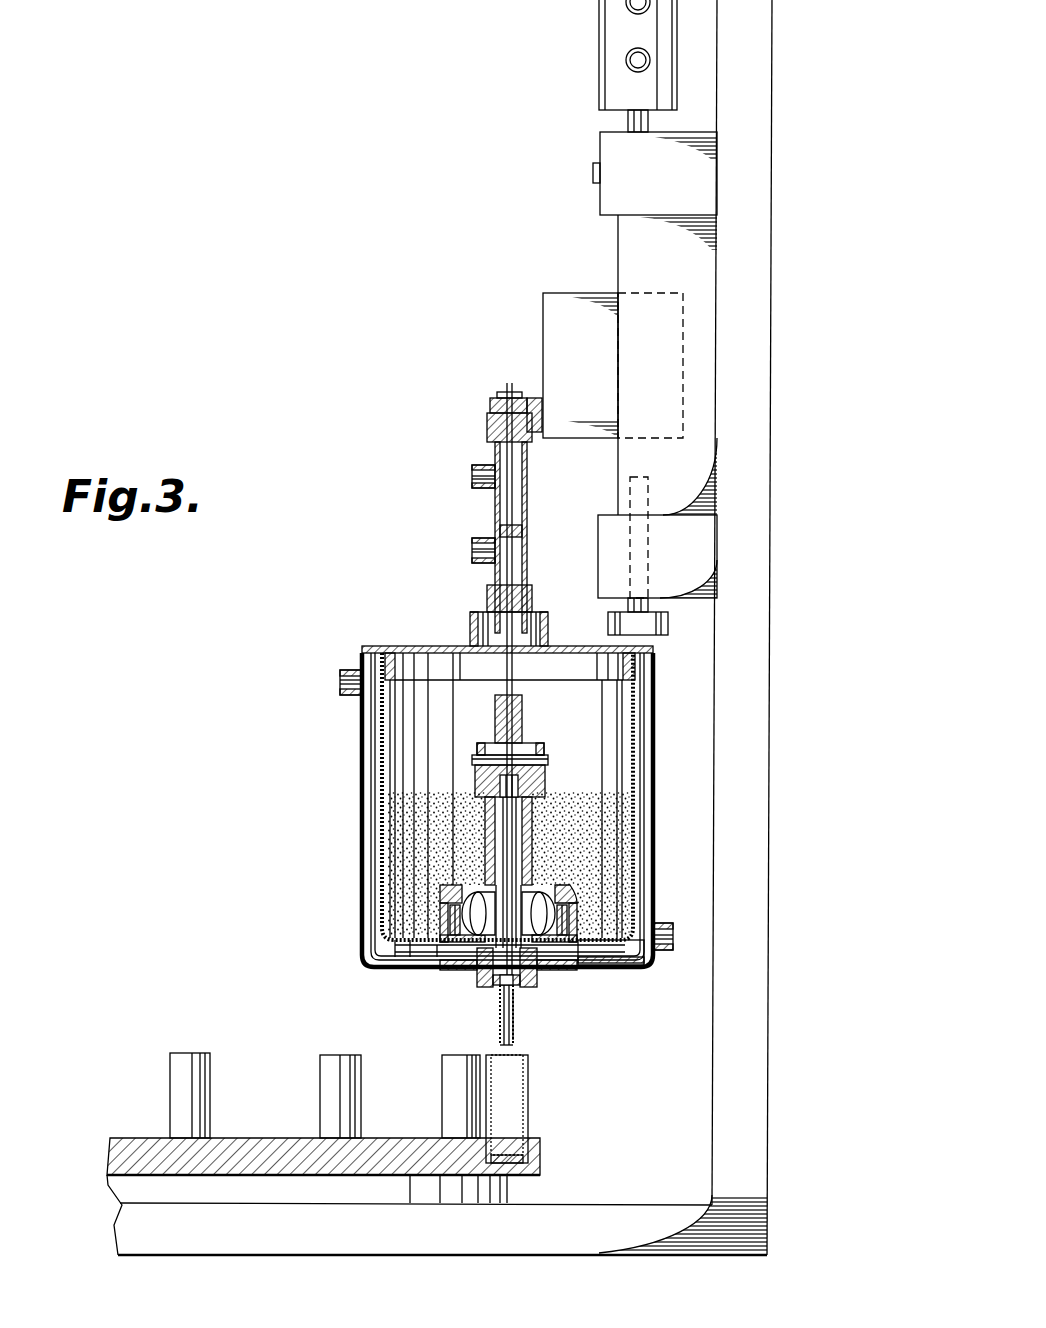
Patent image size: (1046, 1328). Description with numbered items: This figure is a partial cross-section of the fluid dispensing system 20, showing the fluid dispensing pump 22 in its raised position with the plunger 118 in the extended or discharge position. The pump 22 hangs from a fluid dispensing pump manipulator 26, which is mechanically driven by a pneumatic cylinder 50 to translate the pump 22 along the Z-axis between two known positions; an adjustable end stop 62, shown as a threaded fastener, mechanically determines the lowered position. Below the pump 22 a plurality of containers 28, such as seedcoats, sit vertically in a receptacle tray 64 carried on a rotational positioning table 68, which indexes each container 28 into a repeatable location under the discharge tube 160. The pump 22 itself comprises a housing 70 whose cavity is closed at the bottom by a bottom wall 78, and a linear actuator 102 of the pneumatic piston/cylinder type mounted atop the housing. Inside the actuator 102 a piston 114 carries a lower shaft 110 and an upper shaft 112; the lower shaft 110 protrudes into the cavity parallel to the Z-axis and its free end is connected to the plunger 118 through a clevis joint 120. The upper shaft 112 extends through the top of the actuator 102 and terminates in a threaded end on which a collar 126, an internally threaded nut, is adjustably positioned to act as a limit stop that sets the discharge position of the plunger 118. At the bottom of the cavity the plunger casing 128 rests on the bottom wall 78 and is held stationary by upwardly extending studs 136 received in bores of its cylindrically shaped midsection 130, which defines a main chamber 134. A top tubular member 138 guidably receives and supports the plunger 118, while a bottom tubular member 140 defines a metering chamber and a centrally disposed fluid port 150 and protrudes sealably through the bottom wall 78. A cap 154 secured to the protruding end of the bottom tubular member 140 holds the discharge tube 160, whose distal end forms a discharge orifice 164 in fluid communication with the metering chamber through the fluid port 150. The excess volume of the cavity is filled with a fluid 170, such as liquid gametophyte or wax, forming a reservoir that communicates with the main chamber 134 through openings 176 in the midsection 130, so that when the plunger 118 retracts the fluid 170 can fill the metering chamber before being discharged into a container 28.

The fluid dispensing system 20 is at (358, 296).
The fluid dispensing pump 22 is at (337, 637).
The fluid dispensing pump manipulator 26 is at (580, 265).
The container 28 is at (177, 1077).
The pneumatic cylinder 50 is at (614, 40).
The adjustable end stop 62 is at (630, 505).
The receptacle tray 64 is at (110, 1155).
The rotational positioning table 68 is at (118, 1192).
The housing 70 is at (360, 718).
The bottom wall 78 is at (412, 947).
The linear actuator 102 is at (463, 513).
The lower shaft 110 is at (494, 590).
The upper shaft 112 is at (496, 452).
The piston 114 is at (500, 527).
The plunger 118 is at (513, 848).
The clevis joint 120 is at (468, 778).
The collar 126 is at (497, 390).
The plunger casing 128 is at (570, 883).
The midsection 130 is at (572, 910).
The main chamber 134 is at (465, 912).
The studs 136 is at (565, 925).
The top tubular member 138 is at (483, 820).
The bottom tubular member 140 is at (540, 972).
The fluid port 150 is at (523, 987).
The cap 154 is at (478, 978).
The discharge tube 160 is at (514, 1024).
The discharge orifice 164 is at (500, 1043).
The fluid 170 is at (572, 792).
The openings 176 is at (468, 887).